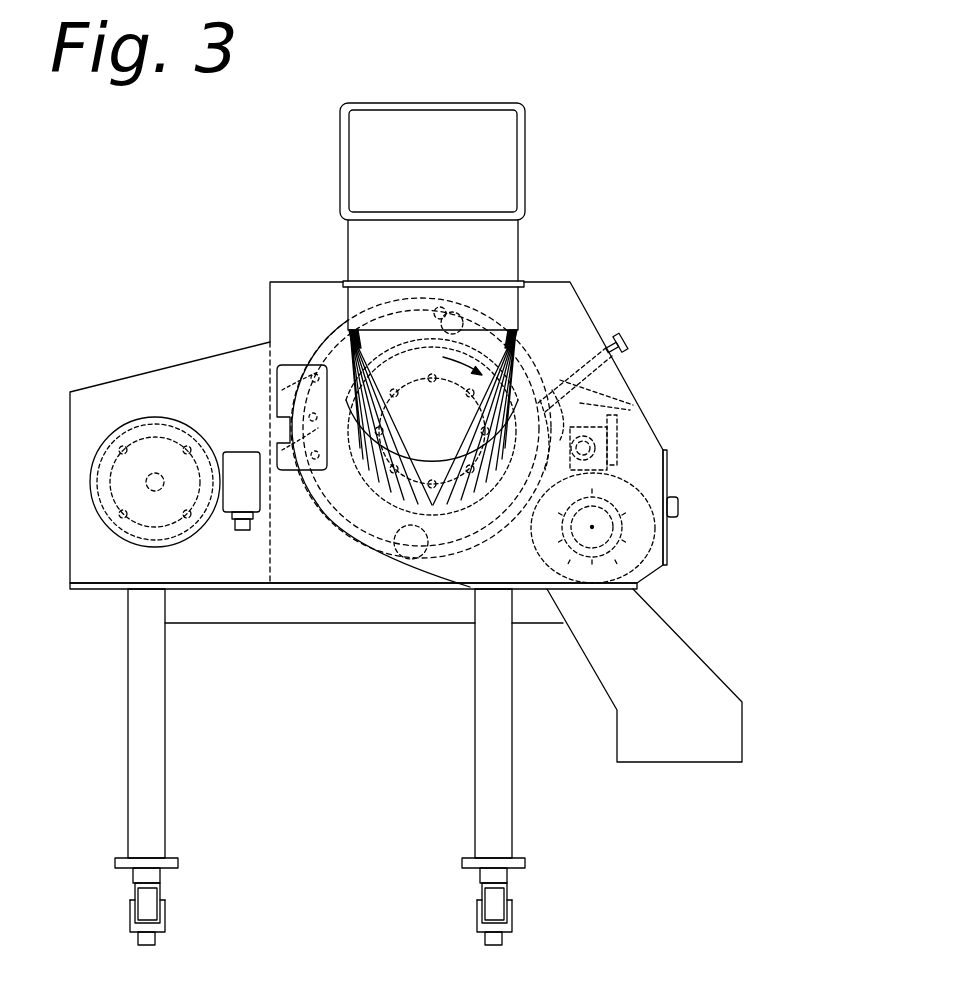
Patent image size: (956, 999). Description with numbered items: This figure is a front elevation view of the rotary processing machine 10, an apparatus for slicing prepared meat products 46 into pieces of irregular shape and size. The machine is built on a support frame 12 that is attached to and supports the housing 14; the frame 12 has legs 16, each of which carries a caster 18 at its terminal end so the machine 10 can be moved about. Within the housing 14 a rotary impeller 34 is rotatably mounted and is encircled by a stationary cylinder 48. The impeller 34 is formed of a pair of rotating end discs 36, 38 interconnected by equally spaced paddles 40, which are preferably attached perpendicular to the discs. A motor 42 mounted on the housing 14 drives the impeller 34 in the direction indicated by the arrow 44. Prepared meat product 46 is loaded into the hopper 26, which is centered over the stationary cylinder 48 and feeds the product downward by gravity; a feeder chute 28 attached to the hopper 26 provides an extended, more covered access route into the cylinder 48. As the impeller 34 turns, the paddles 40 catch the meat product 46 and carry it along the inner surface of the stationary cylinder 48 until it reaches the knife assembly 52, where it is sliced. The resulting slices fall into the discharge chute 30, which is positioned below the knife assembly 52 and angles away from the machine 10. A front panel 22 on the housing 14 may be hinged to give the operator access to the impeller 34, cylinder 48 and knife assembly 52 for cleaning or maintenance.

The rotary processing machine 10 is at (176, 238).
The support frame 12 is at (203, 625).
The housing 14 is at (298, 287).
The legs 16 is at (165, 742).
The casters 18 is at (165, 913).
The front panel 22 is at (522, 572).
The hopper 26 is at (462, 362).
The feeder chute 28 is at (525, 164).
The discharge chute 30 is at (667, 762).
The rotary impeller 34 is at (420, 440).
The rotating end disc 36 is at (363, 517).
The rotating end disc 38 is at (355, 472).
The paddles 40 is at (432, 550).
The motor 42 is at (150, 415).
The arrow 44 is at (513, 313).
The prepared meat products 46 is at (465, 320).
The stationary cylinder 48 is at (463, 555).
The knife assembly 52 is at (610, 388).